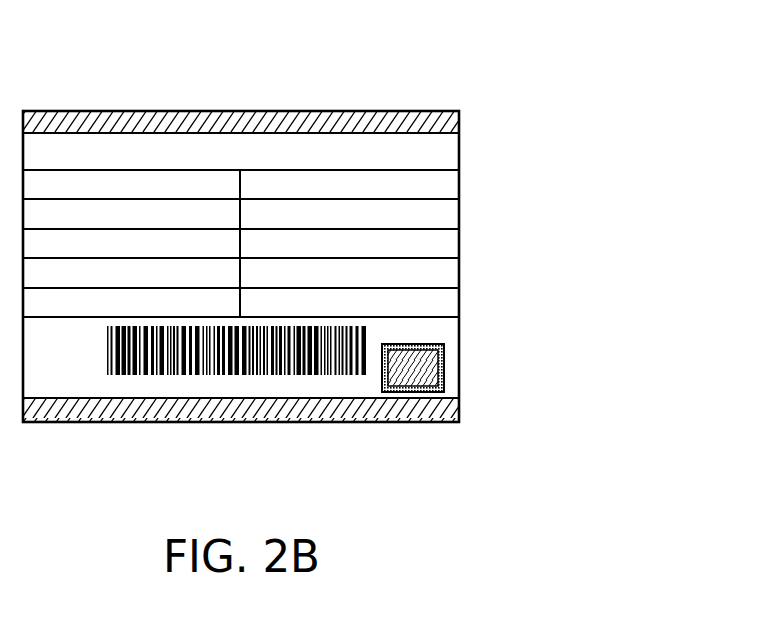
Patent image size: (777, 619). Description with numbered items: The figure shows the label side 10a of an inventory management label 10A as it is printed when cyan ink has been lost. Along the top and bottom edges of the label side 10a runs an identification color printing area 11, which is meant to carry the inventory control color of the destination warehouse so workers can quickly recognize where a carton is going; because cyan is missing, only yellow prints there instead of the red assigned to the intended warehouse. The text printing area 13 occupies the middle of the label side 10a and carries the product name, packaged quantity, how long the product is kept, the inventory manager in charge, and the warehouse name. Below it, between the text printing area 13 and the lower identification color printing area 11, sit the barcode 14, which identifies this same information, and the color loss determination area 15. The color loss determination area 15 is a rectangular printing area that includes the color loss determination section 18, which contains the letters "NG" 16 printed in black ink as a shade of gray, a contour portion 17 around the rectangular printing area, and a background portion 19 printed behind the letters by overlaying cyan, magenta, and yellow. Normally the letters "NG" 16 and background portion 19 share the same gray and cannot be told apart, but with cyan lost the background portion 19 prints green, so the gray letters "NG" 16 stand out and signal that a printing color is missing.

The inventory management label 10A is at (343, 108).
The label side 10a is at (437, 152).
The identification color printing area 11 is at (90, 118).
The text printing area 13 is at (418, 226).
The barcode 14 is at (314, 360).
The color loss determination area 15 is at (447, 380).
The letters "NG" 16 is at (444, 352).
The contour portion 17 is at (413, 345).
The color loss determination section 18 is at (527, 407).
The background portion 19 is at (407, 387).